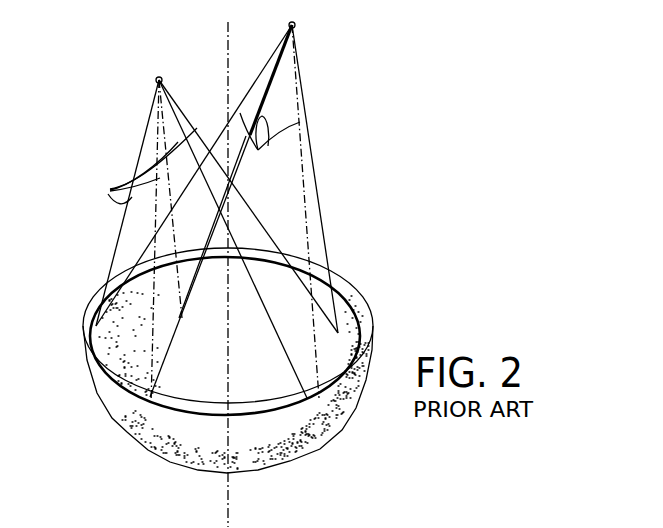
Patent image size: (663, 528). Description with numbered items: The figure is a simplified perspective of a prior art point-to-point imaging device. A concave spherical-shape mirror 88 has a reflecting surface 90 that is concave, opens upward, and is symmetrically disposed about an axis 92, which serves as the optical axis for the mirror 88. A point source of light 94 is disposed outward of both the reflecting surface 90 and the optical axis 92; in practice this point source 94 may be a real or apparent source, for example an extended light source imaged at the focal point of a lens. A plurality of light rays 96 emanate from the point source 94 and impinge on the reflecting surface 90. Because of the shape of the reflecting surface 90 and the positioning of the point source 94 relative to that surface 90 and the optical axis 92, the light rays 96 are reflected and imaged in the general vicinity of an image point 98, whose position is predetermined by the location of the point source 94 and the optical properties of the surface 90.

The concave spherical-shape mirror 88 is at (335, 446).
The reflecting surface 90 is at (349, 318).
The axis 92 is at (229, 81).
The point source of light 94 is at (297, 22).
The light rays 96 is at (191, 160).
The image point 98 is at (159, 76).